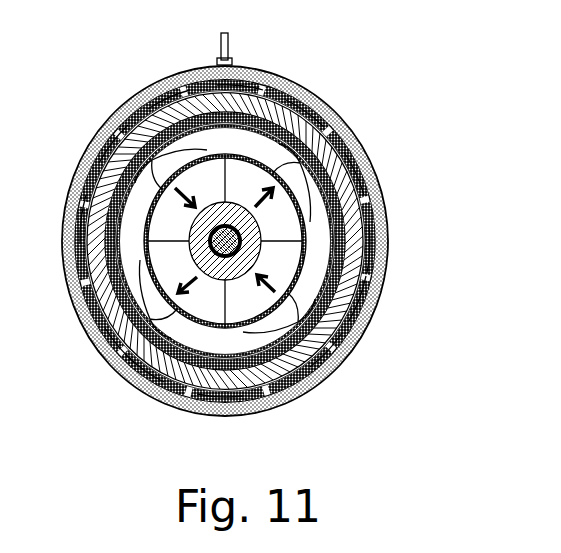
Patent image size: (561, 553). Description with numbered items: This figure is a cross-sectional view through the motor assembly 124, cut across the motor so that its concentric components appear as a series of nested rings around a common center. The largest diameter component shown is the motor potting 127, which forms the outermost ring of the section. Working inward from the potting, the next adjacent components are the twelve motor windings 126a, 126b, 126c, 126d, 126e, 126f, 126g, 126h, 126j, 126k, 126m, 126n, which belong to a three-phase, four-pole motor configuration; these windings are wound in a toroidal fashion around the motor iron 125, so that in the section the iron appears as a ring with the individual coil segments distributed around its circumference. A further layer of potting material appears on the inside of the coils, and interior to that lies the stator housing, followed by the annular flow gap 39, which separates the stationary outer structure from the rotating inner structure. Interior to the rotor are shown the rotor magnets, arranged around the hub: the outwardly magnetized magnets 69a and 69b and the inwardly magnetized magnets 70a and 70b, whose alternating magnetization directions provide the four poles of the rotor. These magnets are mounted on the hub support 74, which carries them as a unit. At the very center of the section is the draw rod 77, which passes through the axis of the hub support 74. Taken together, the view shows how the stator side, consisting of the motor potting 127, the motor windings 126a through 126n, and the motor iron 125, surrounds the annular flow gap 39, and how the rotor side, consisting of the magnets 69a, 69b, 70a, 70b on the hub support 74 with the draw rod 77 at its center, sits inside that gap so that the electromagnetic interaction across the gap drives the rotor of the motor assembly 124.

The motor assembly 124 is at (342, 397).
The motor potting 127 is at (357, 145).
The motor iron 125 is at (353, 215).
The motor winding 126a is at (105, 137).
The motor winding 126b is at (165, 90).
The motor winding 126c is at (242, 63).
The motor winding 126d is at (318, 95).
The motor winding 126e is at (374, 164).
The motor winding 126f is at (365, 248).
The motor winding 126g is at (358, 300).
The motor winding 126h is at (338, 365).
The motor winding 126j is at (218, 412).
The motor winding 126k is at (143, 372).
The motor winding 126m is at (110, 355).
The motor winding 126n is at (78, 218).
The annular flow gap 39 is at (305, 283).
The draw rod 77 is at (195, 265).
The hub support 74 is at (213, 255).
The outwardly magnetized magnet 69a is at (246, 183).
The outwardly magnetized magnet 69b is at (200, 293).
The inwardly magnetized magnet 70a is at (173, 207).
The inwardly magnetized magnet 70b is at (253, 288).